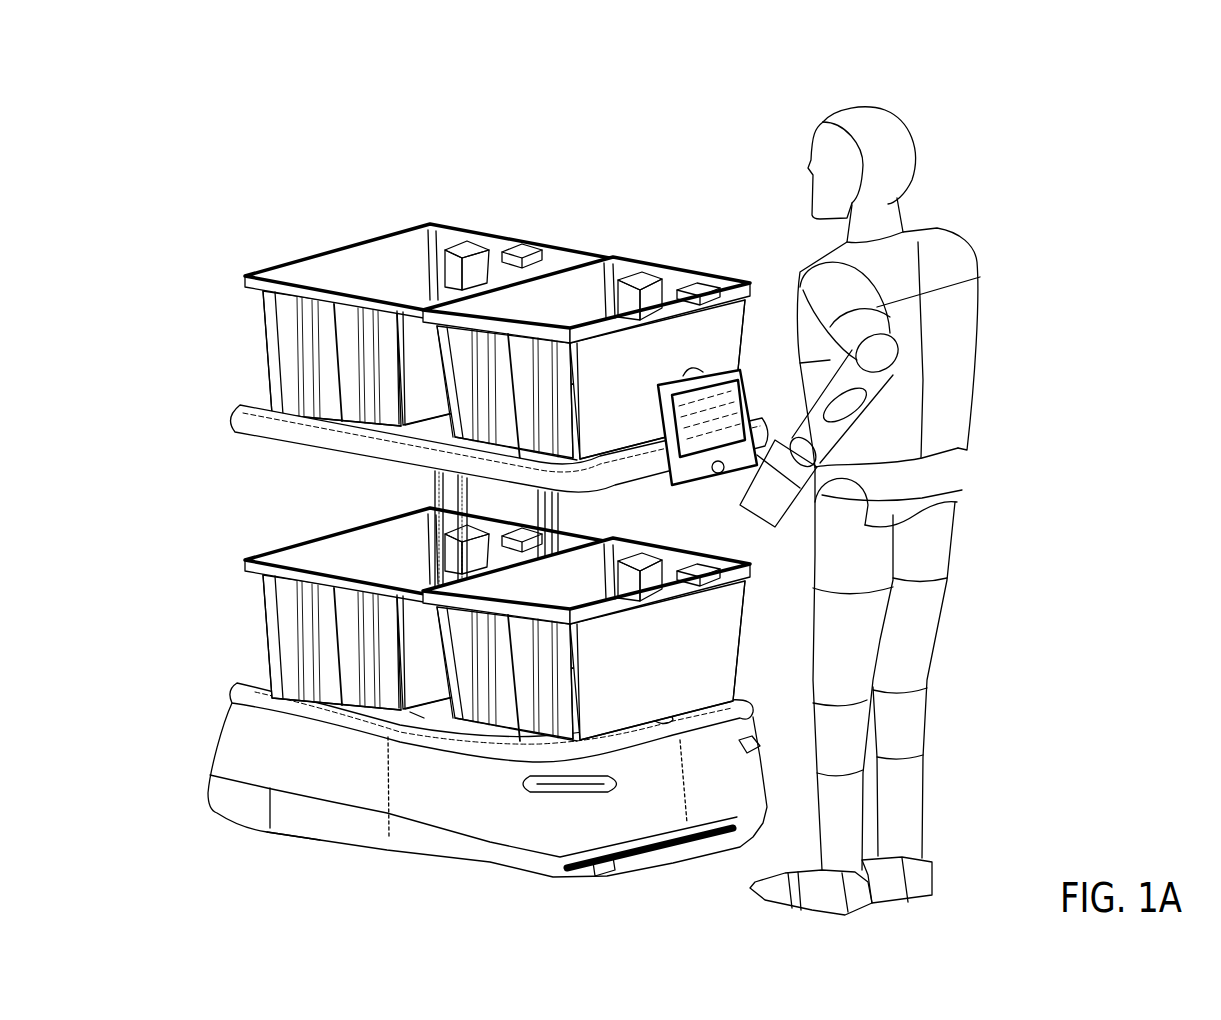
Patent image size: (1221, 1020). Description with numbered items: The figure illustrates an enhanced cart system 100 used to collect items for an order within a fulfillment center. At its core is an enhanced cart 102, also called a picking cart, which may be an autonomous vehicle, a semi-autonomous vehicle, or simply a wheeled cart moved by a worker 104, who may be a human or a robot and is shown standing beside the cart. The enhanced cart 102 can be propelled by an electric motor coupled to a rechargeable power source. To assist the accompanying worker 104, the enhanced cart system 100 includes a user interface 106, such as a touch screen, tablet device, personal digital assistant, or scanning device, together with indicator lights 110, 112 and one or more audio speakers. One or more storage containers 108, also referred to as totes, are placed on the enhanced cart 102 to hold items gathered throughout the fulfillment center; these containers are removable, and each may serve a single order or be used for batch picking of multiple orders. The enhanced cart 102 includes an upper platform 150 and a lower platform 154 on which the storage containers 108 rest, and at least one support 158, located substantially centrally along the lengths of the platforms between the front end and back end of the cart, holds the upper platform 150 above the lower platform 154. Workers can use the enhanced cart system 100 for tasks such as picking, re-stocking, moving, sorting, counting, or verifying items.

The enhanced cart system 100 is at (304, 81).
The enhanced cart 102 is at (377, 772).
The worker 104 is at (795, 221).
The user interface 106 is at (686, 489).
The storage containers 108 is at (287, 264).
The indicator lights 110 is at (545, 789).
The indicator lights 112 is at (260, 404).
The upper platform 150 is at (330, 437).
The lower platform 154 is at (418, 716).
The support 158 is at (530, 542).